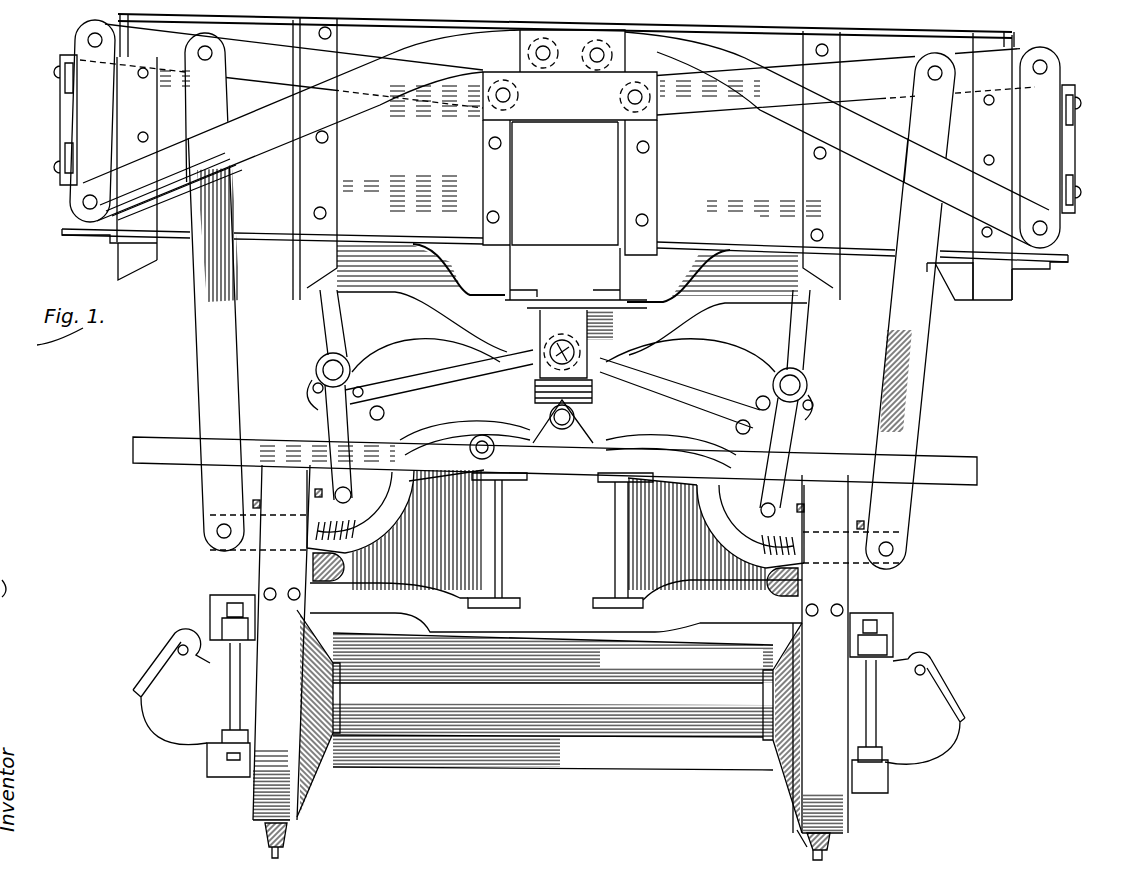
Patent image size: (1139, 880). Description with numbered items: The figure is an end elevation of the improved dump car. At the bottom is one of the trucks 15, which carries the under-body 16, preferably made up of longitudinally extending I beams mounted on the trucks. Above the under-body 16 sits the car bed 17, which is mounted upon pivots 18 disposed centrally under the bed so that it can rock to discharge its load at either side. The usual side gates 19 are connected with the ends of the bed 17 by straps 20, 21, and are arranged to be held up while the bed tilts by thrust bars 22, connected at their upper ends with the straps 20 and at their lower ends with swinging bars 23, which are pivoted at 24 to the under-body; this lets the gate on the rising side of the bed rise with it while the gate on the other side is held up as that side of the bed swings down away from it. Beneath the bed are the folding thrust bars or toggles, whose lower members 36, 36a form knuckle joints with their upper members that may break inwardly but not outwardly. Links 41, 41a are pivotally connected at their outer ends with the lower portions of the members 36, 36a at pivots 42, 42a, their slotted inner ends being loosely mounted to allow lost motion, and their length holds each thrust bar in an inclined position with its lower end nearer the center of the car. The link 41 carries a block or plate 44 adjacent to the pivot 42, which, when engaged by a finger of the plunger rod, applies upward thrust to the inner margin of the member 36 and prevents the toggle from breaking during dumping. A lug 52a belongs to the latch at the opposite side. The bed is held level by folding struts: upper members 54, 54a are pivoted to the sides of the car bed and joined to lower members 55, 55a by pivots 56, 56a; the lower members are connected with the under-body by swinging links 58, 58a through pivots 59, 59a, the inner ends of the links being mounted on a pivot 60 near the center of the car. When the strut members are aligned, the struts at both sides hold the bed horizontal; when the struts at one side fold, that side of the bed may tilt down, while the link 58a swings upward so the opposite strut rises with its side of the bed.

The truck 15 is at (910, 625).
The under-body 16 is at (617, 538).
The car bed 17 is at (953, 290).
The pivot 18 is at (556, 350).
The side gate 19 is at (60, 130).
The strap 20 is at (350, 63).
The strap 21 is at (420, 100).
The thrust bar 22 is at (210, 370).
The swinging bar 23 is at (240, 553).
The pivot 24 is at (562, 430).
The lower toggle member 36 is at (812, 416).
The lower toggle member 36a is at (313, 398).
The link 41 is at (677, 355).
The link 41a is at (432, 350).
The pivot 42 is at (750, 434).
The pivot 42a is at (378, 406).
The block or plate 44 is at (555, 461).
The lug 52a is at (465, 438).
The upper strut member 54 is at (320, 312).
The upper strut member 54a is at (808, 333).
The lower strut member 55 is at (332, 418).
The lower strut member 55a is at (803, 440).
The pivot 56 is at (318, 357).
The pivot 56a is at (805, 375).
The swinging link 58 is at (351, 495).
The swinging link 58a is at (760, 508).
The pivot 59 is at (350, 500).
The pivot 59a is at (787, 530).
The pivot 60 is at (482, 440).